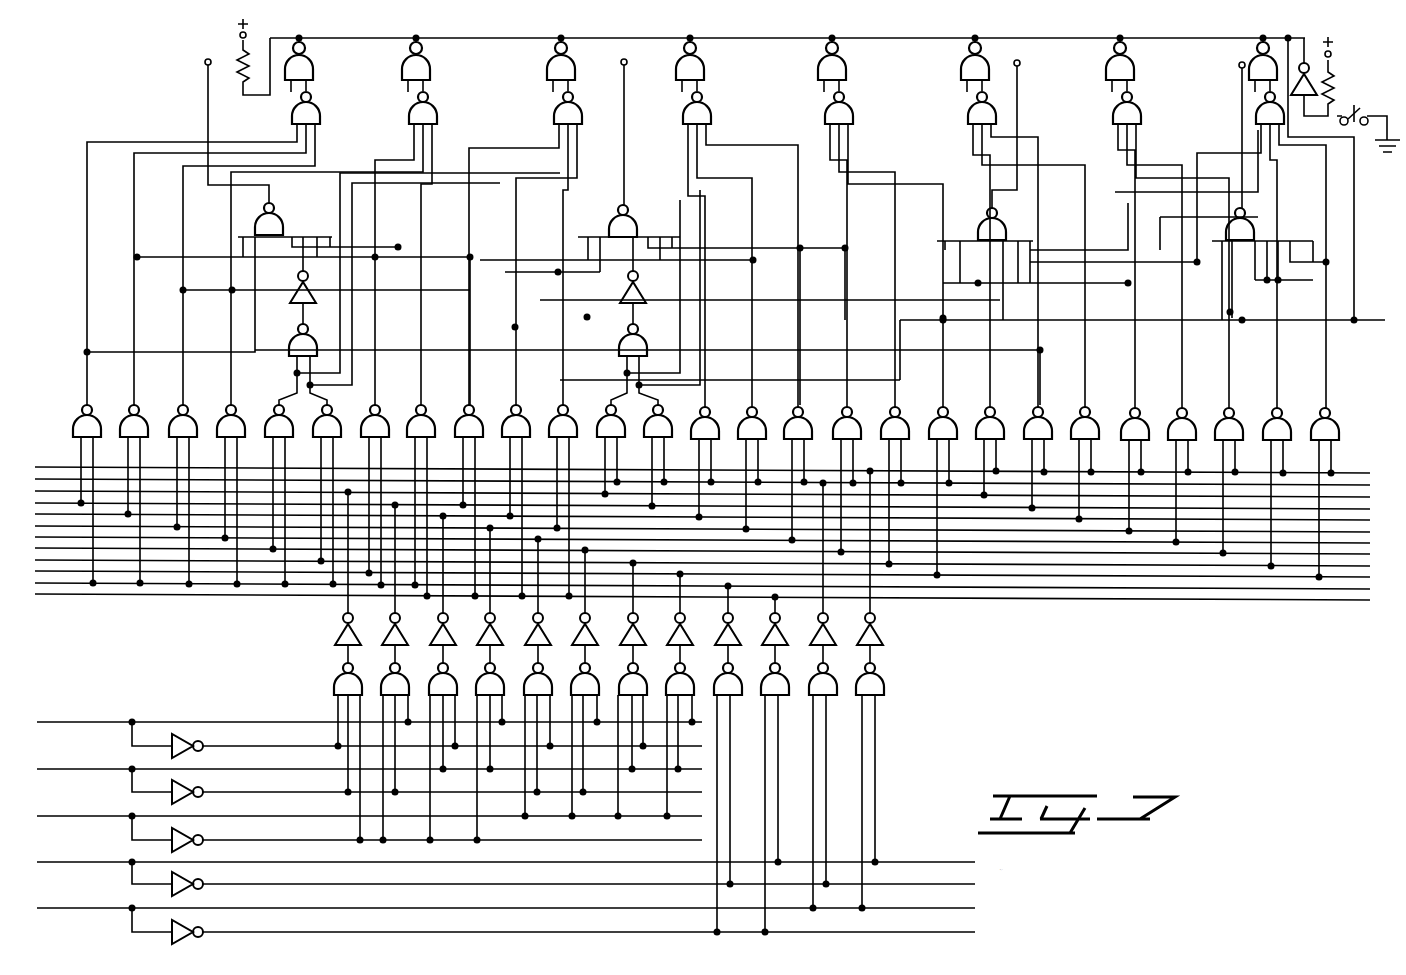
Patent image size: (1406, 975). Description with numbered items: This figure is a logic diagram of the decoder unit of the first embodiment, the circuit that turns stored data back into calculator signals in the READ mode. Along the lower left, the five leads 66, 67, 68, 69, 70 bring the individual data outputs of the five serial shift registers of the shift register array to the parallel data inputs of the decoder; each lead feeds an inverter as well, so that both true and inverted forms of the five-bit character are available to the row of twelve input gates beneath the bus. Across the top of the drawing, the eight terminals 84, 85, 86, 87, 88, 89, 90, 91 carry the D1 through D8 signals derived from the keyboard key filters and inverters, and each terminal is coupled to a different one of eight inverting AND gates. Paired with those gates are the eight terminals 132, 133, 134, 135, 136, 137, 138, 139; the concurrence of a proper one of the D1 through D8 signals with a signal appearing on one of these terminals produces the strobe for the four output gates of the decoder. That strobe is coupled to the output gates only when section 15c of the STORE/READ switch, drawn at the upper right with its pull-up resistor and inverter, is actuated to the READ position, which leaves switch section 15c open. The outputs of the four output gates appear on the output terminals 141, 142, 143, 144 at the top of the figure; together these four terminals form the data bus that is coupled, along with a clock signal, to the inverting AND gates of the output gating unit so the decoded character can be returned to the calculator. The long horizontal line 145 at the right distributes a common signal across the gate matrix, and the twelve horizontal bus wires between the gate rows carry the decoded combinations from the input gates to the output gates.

The lead 66 is at (49, 722).
The lead 67 is at (49, 769).
The lead 68 is at (49, 816).
The lead 69 is at (49, 862).
The lead 70 is at (49, 908).
The terminal 84 is at (291, 95).
The terminal 85 is at (408, 95).
The terminal 86 is at (553, 95).
The terminal 87 is at (682, 95).
The terminal 88 is at (824, 92).
The terminal 89 is at (967, 92).
The terminal 90 is at (1112, 88).
The terminal 91 is at (1255, 92).
The terminal 132 is at (312, 108).
The terminal 133 is at (429, 108).
The terminal 134 is at (574, 108).
The terminal 135 is at (703, 108).
The terminal 136 is at (845, 108).
The terminal 137 is at (972, 118).
The terminal 138 is at (1117, 118).
The terminal 139 is at (1258, 118).
The output terminal 141 is at (208, 112).
The output terminal 142 is at (628, 95).
The output terminal 143 is at (1020, 90).
The output terminal 144 is at (1242, 95).
The line 145 is at (1354, 278).
The section of STORE/READ switch 15c is at (1354, 114).